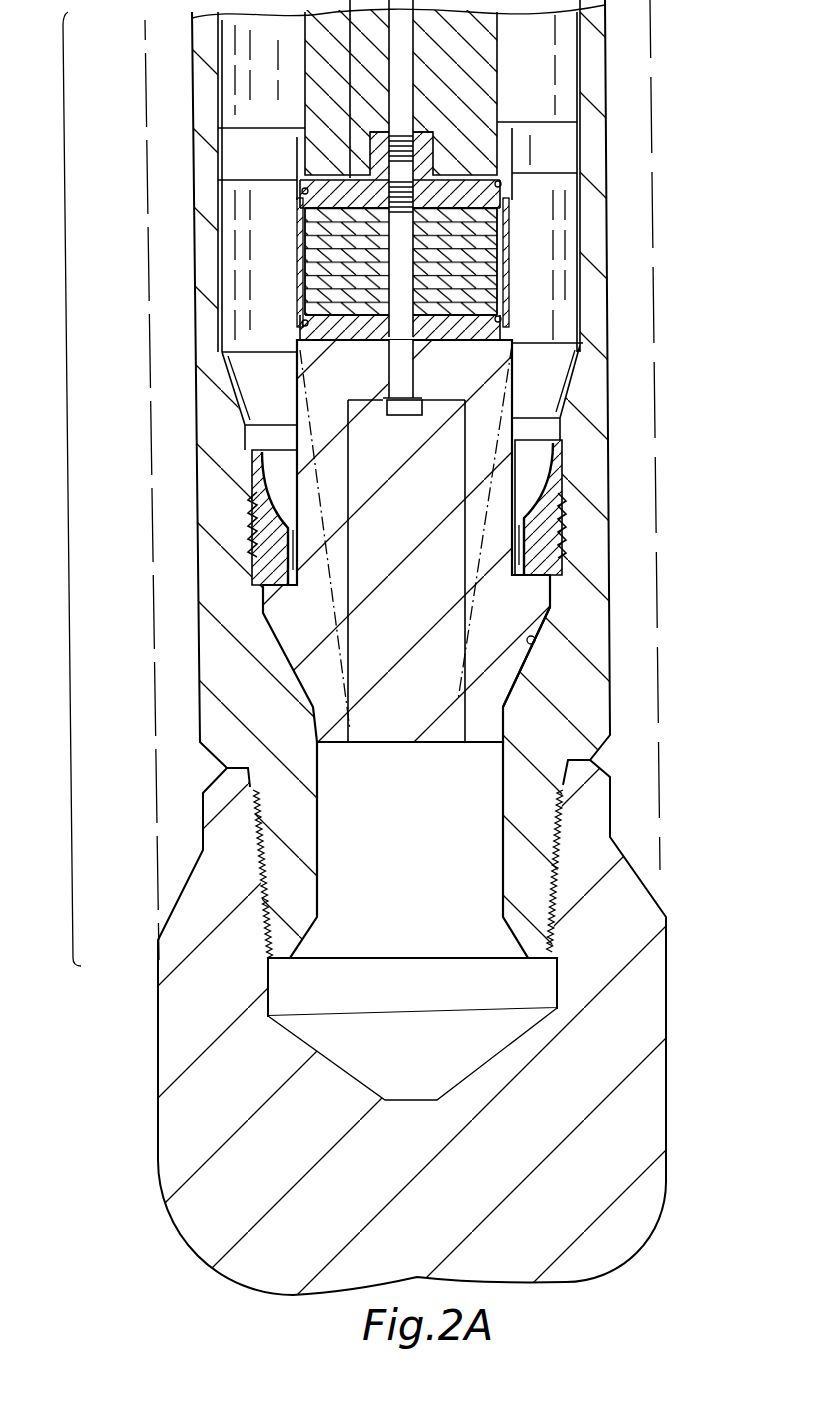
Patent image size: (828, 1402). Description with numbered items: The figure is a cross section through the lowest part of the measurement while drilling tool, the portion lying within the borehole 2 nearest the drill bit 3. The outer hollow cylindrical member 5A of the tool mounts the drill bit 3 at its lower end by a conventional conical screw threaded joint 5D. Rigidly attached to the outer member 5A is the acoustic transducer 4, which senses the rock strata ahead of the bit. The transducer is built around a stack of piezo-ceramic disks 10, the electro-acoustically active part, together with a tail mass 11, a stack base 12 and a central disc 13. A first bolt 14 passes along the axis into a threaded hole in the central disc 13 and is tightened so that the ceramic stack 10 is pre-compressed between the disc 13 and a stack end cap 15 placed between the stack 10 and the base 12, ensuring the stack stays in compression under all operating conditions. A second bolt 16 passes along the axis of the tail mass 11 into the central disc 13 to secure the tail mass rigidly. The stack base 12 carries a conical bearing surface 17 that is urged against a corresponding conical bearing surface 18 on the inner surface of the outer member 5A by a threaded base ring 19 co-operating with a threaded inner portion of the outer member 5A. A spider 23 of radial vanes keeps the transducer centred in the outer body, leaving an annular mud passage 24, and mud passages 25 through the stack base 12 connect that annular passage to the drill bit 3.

The borehole 2 is at (664, 850).
The drill bit 3 is at (207, 1154).
The acoustic transducer 4 is at (59, 489).
The outer hollow cylindrical member 5A is at (210, 706).
The second conventional screw threaded joint 5D is at (258, 820).
The stack of piezoelectric ceramic disks 10 is at (295, 238).
The tail mass 11 is at (470, 55).
The stack base 12 is at (488, 360).
The central disc 13 is at (503, 203).
The first bolt 14 is at (400, 366).
The stack end cap 15 is at (508, 320).
The second bolt 16 is at (409, 94).
The conical bearing surface 17 is at (535, 641).
The conical bearing surface 18 is at (520, 690).
The threaded base ring 19 is at (548, 530).
The spider 23 is at (237, 160).
The annular mud passage 24 is at (550, 268).
The mud passages 25 is at (450, 622).